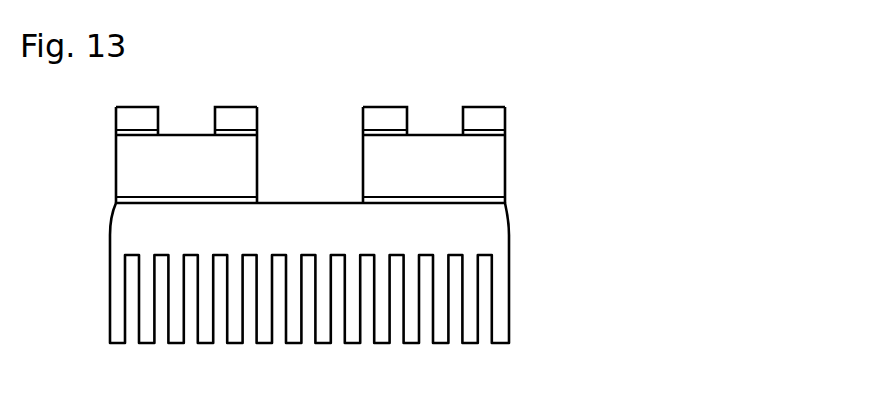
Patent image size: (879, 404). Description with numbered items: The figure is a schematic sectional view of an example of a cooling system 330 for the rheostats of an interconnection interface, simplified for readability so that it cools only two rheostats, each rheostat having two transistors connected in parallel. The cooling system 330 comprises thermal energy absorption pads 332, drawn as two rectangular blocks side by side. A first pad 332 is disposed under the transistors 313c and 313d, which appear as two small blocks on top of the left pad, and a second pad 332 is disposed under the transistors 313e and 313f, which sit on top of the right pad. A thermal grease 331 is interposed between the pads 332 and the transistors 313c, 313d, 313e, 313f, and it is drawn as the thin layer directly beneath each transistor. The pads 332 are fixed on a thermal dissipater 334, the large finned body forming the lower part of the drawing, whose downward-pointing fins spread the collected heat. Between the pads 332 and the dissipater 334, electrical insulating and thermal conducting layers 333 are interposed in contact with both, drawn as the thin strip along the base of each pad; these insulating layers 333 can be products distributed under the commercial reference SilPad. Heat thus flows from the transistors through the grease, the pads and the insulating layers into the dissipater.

The cooling system 330 is at (670, 217).
The thermal grease 331 is at (116, 134).
The thermal energy absorption pad 332 is at (114, 166).
The electrical insulating and thermal conducting layer 333 is at (505, 200).
The thermal dissipater 334 is at (509, 257).
The transistor 313c is at (116, 118).
The transistor 313d is at (257, 120).
The transistor 313e is at (363, 119).
The transistor 313f is at (505, 120).